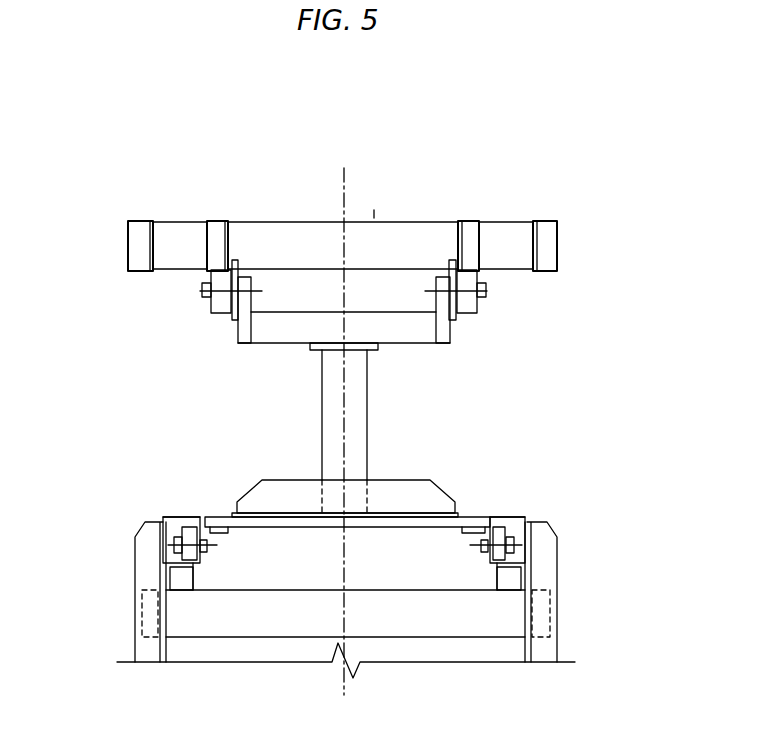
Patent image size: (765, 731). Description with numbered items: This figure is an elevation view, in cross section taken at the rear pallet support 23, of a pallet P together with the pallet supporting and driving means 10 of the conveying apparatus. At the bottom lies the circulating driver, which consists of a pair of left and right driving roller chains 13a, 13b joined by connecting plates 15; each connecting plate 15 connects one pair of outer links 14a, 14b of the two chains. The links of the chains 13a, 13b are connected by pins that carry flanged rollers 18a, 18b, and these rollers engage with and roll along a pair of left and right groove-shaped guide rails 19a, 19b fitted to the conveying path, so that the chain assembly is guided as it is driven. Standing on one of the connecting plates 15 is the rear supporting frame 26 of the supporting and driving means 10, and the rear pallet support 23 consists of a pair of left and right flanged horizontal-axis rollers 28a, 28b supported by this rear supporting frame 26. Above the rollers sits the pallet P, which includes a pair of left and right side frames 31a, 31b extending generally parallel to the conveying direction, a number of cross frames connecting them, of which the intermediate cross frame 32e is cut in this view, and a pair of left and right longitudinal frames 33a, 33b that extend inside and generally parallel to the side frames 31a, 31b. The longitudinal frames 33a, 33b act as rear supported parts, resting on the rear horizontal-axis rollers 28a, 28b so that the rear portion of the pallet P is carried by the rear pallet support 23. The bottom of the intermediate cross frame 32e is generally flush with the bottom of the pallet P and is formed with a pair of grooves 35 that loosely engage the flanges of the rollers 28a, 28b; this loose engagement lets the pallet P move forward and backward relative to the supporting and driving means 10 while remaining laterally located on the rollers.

The supporting and driving means 10 is at (459, 332).
The left driving roller chain 13a is at (173, 552).
The right driving roller chain 13b is at (512, 552).
The outer link 14a is at (217, 548).
The outer link 14b is at (477, 548).
The connecting plate 15 is at (363, 523).
The flanged roller 18a is at (170, 538).
The flanged roller 18b is at (527, 537).
The left guide rail 19a is at (185, 518).
The right guide rail 19b is at (505, 518).
The rear pallet support 23 is at (202, 302).
The rear supporting frame 26 is at (355, 415).
The left rear flanged horizontal-axis roller 28a is at (220, 307).
The right rear flanged horizontal-axis roller 28b is at (468, 303).
The left side frame 31a is at (128, 243).
The right side frame 31b is at (557, 243).
The intermediate cross frame 32e is at (310, 238).
The left longitudinal frame 33a is at (207, 245).
The right longitudinal frame 33b is at (480, 243).
The groove 35 is at (233, 258).
The pallet P is at (374, 220).